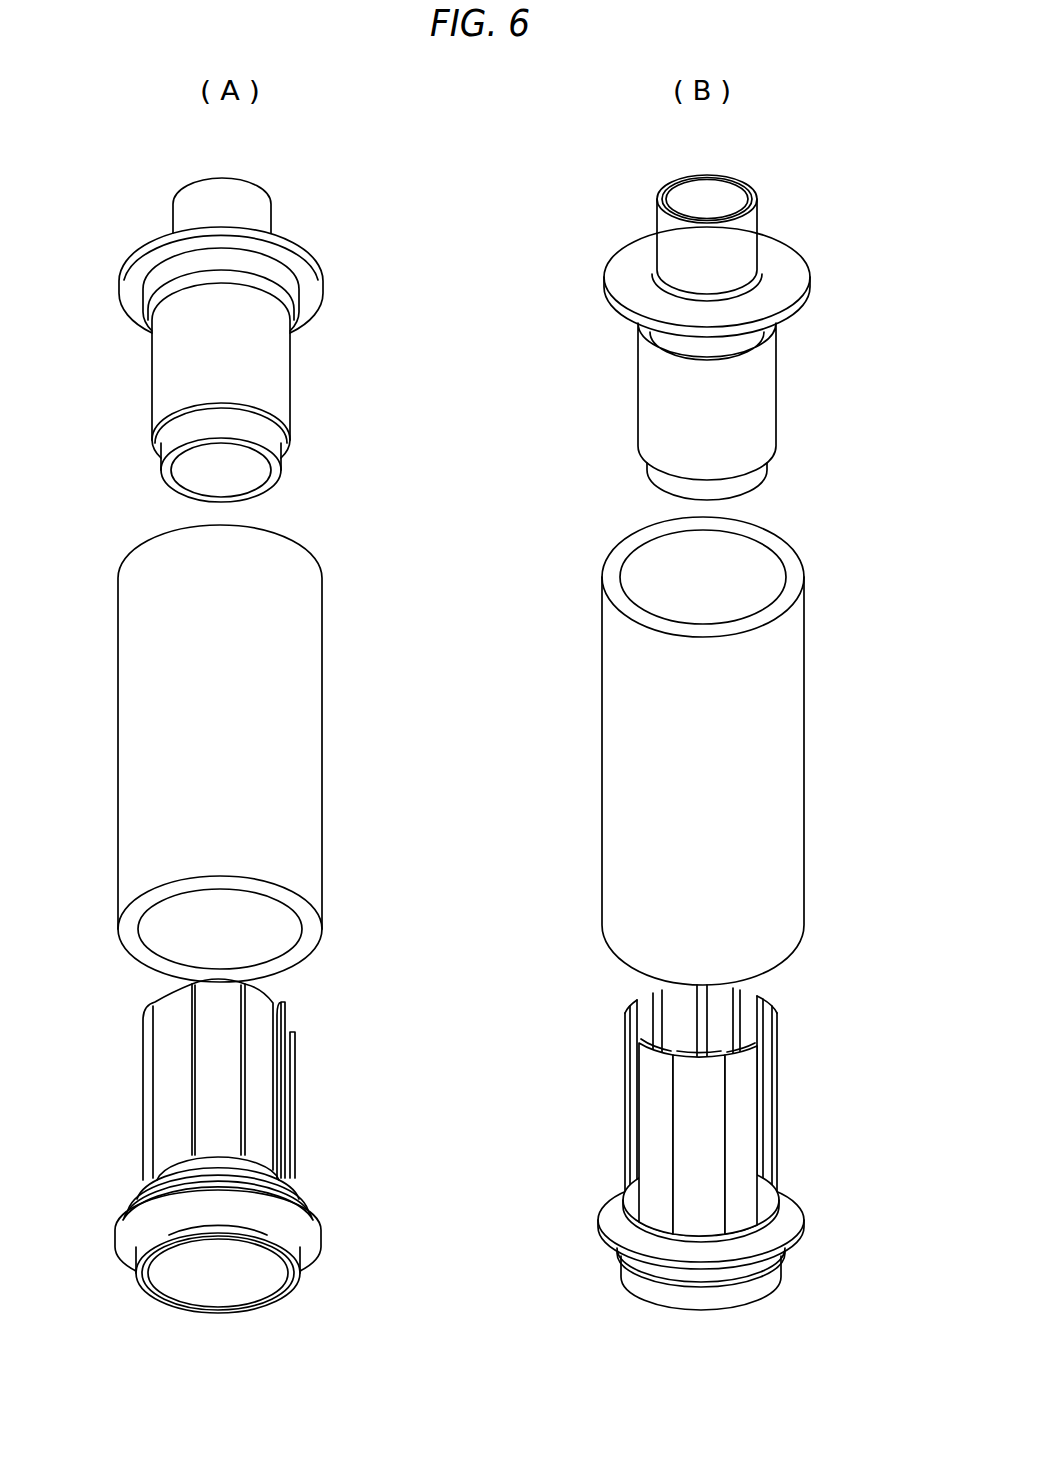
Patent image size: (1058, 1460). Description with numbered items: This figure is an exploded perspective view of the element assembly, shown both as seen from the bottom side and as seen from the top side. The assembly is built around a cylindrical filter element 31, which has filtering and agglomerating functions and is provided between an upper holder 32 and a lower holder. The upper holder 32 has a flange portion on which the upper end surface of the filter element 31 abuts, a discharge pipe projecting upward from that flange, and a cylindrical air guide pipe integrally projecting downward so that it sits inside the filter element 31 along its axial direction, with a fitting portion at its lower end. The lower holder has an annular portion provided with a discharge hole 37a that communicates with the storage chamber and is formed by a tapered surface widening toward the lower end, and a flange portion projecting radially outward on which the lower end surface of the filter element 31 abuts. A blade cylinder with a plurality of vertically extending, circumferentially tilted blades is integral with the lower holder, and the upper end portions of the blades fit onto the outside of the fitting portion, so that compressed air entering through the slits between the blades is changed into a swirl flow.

The filter element 31 is at (310, 737).
The upper holder 32 is at (753, 308).
The discharge hole 37a is at (230, 1283).